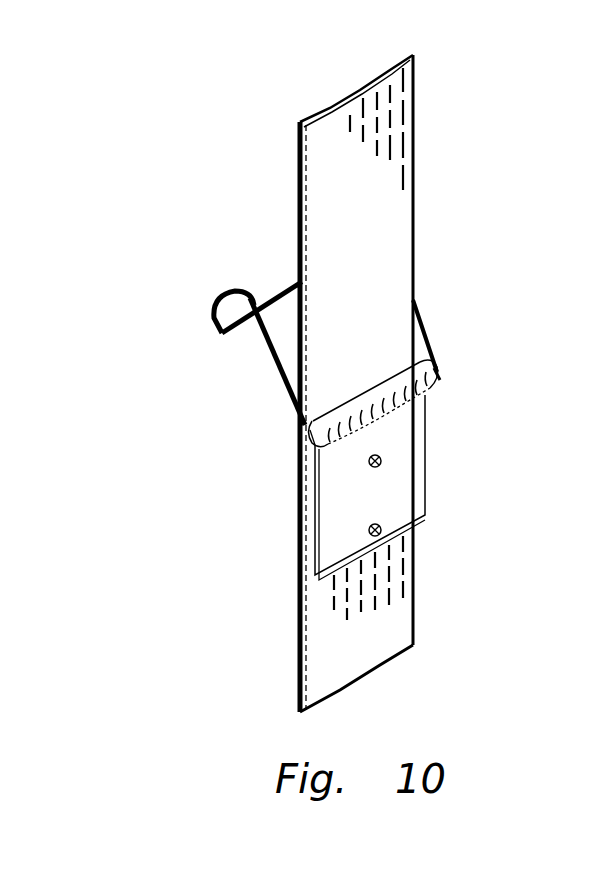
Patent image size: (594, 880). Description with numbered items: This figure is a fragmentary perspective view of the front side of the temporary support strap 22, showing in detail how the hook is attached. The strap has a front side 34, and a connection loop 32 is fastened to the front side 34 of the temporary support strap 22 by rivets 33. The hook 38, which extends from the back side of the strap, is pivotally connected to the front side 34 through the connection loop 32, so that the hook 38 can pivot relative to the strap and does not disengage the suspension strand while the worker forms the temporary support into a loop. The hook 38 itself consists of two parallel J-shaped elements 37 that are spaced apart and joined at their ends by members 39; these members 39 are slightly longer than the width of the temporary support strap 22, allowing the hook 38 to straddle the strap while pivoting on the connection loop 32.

The temporary support strap 22 is at (432, 566).
The connection loop 32 is at (418, 462).
The rivets 33 is at (370, 463).
The front side 34 is at (402, 210).
The J-shaped elements 37 is at (278, 368).
The hook 38 is at (213, 305).
The members 39 is at (283, 285).